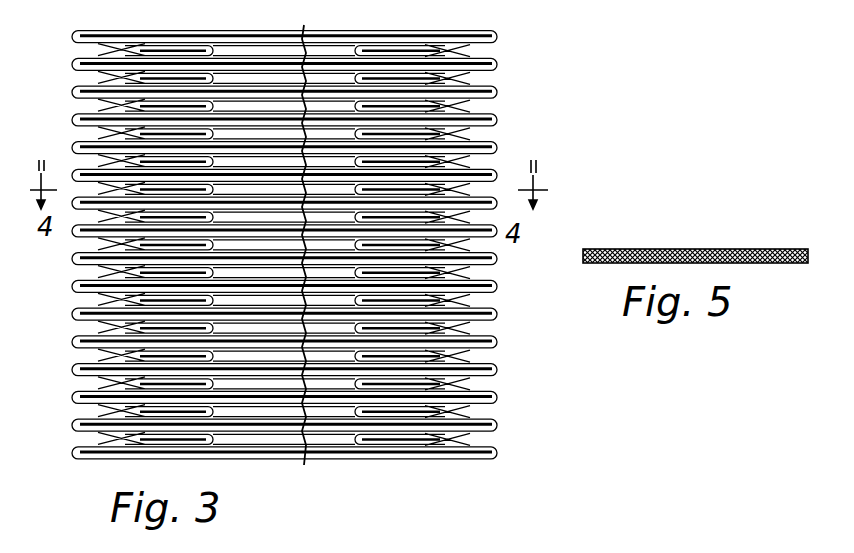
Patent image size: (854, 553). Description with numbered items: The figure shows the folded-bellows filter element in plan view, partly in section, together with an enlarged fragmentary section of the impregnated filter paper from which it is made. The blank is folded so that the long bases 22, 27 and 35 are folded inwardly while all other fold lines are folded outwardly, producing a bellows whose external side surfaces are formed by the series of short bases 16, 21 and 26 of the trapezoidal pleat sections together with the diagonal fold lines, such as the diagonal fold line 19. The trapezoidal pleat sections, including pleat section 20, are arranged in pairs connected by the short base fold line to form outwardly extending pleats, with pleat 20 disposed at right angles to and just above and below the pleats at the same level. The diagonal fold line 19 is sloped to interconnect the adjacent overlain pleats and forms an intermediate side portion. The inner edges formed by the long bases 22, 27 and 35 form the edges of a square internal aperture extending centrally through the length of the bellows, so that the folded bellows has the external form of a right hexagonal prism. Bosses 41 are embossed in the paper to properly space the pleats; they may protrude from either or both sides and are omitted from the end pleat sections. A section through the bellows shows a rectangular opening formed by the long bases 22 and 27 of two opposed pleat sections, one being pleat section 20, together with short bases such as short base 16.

The short base 16 is at (270, 433).
The diagonal fold line 19 is at (96, 438).
The trapezoidal pleat section 20 is at (465, 307).
The short base 21 is at (76, 396).
The long base 22 is at (462, 51).
The short base 26 is at (490, 118).
The long base 27 is at (352, 450).
The long base 35 is at (322, 450).
The boss 41 is at (110, 330).